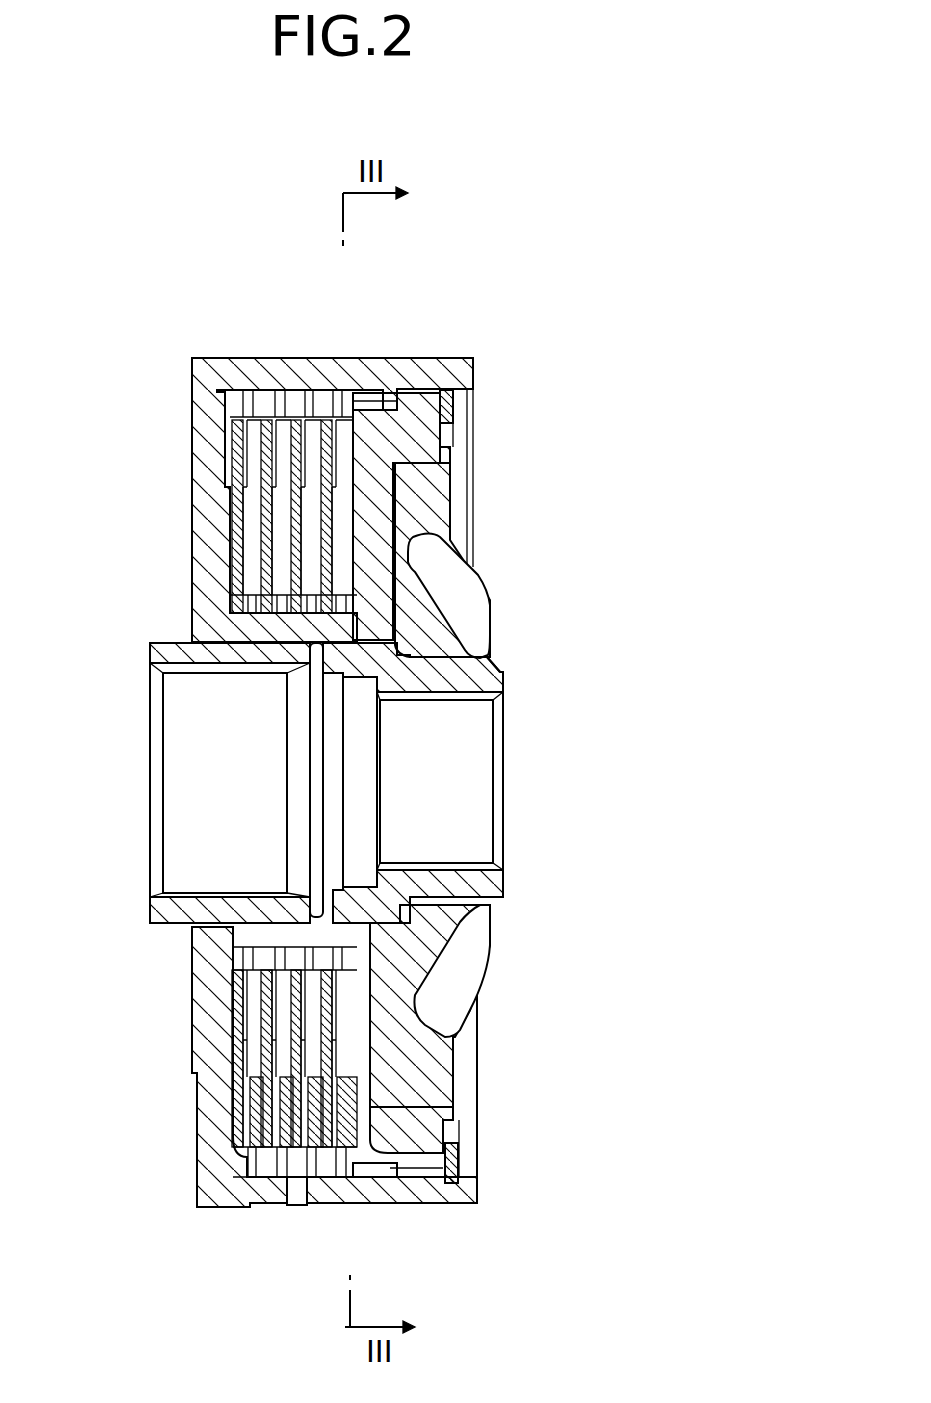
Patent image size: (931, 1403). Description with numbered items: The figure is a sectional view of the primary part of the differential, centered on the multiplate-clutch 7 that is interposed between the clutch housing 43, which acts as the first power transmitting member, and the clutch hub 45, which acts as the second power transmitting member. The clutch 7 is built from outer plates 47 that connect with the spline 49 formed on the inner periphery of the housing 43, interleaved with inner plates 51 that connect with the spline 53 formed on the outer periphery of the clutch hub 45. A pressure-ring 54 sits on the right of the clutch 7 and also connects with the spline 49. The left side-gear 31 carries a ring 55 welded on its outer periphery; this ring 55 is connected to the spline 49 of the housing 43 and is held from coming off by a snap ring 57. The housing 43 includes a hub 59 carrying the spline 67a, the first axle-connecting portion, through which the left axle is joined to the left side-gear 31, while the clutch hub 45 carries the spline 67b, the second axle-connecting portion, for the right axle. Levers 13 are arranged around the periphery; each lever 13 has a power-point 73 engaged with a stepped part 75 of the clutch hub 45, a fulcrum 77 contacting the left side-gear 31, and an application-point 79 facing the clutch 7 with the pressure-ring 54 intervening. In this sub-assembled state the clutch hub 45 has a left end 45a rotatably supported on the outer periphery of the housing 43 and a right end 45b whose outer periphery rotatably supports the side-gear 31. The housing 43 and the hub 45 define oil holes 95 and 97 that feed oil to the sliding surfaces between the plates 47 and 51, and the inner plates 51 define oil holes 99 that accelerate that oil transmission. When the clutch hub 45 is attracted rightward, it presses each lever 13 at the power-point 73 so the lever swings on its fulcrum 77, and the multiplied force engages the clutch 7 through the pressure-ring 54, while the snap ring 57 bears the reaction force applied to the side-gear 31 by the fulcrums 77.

The multiplate-clutch 7 is at (282, 345).
The lever 13 is at (368, 398).
The left side-gear 31 is at (470, 592).
The clutch housing 43 is at (204, 345).
The clutch hub 45 is at (512, 686).
The left end 45a is at (190, 650).
The right end 45b is at (497, 664).
The outer plates 47 is at (240, 455).
The spline 49 is at (232, 400).
The inner plates 51 is at (235, 578).
The spline 53 is at (250, 632).
The pressure-ring 54 is at (345, 388).
The ring 55 is at (450, 1137).
The snap ring 57 is at (449, 380).
The hub 59 is at (212, 658).
The spline 67a is at (218, 895).
The spline 67b is at (455, 870).
The power-point 73 is at (400, 622).
The stepped part 75 is at (385, 985).
The fulcrum 77 is at (390, 505).
The application-point 79 is at (440, 445).
The oil hole 95 is at (300, 1208).
The oil hole 97 is at (283, 895).
The oil holes 99 is at (240, 1022).